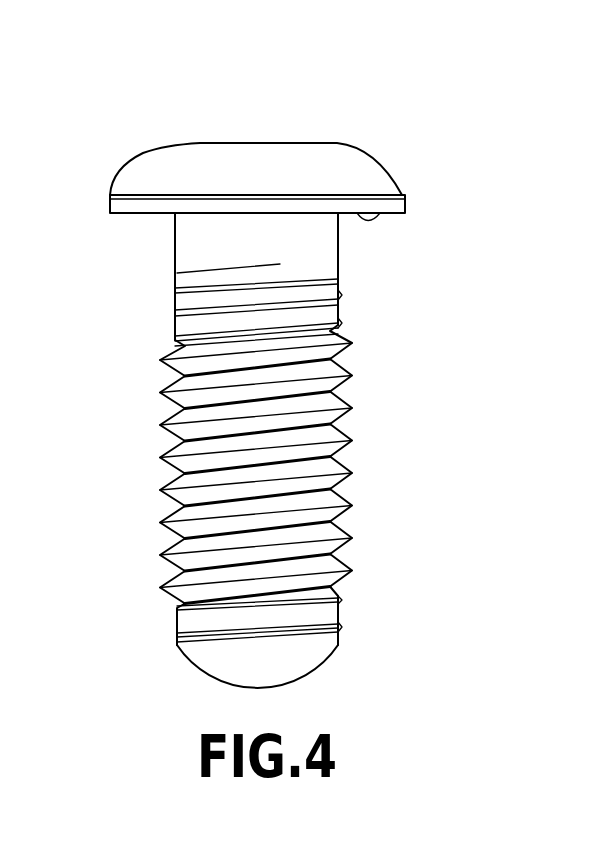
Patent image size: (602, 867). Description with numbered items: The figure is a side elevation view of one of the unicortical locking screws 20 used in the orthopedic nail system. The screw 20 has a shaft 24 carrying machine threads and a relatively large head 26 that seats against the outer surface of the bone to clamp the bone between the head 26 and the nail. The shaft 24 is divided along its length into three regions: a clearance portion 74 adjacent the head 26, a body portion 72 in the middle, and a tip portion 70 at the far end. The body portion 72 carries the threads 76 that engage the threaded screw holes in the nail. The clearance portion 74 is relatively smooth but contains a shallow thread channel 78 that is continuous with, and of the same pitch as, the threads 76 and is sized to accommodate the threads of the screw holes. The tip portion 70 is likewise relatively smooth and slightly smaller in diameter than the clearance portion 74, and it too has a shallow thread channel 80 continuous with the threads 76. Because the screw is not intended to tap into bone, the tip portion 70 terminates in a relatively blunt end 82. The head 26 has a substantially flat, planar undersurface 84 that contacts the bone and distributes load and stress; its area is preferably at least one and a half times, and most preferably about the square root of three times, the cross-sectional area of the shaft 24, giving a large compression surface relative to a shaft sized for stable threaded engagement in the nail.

The locking screw 20 is at (436, 103).
The shaft 24 is at (423, 226).
The head 26 is at (178, 163).
The tip portion 70 is at (140, 608).
The body portion 72 is at (140, 350).
The clearance portion 74 is at (140, 220).
The threads 76 is at (355, 469).
The thread channel 78 is at (339, 298).
The thread channel 80 is at (340, 623).
The blunt end 82 is at (285, 684).
The undersurface 84 is at (398, 197).